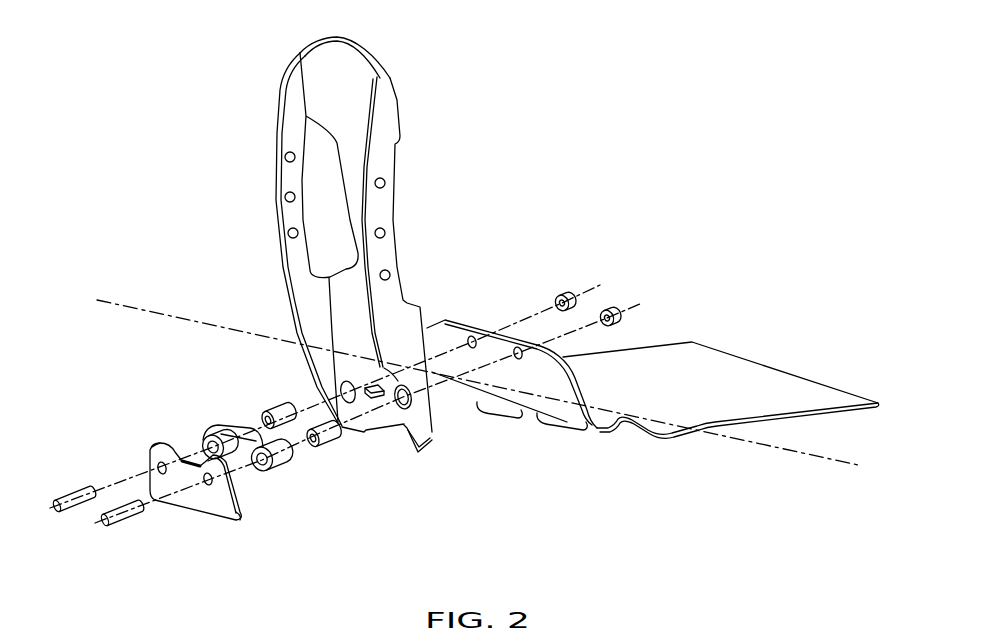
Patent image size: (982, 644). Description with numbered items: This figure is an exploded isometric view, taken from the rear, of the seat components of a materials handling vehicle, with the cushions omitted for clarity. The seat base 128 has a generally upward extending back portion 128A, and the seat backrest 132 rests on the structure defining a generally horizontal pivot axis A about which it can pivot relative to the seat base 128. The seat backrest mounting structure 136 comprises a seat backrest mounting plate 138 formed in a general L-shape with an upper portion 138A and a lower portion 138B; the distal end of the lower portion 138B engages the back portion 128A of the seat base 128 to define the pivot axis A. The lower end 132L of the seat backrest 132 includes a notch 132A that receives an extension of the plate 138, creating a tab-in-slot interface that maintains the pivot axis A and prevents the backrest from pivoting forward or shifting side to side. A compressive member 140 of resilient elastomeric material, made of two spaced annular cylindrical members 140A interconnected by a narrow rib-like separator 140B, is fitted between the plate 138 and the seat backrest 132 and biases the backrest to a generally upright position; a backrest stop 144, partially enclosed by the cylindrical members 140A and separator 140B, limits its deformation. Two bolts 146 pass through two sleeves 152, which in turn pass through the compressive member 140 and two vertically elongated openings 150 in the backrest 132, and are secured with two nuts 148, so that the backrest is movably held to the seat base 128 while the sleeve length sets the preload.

The seat base 128 is at (808, 393).
The back portion of the seat base 128A is at (528, 387).
The seat backrest 132 is at (342, 55).
The notch 132A is at (387, 433).
The lower end of the seat backrest 132L is at (355, 445).
The seat backrest mounting structure 136 is at (141, 459).
The seat backrest mounting plate 138 is at (189, 484).
The upper portion of the mounting plate 138A is at (162, 440).
The lower portion of the mounting plate 138B is at (243, 521).
The compressive member 140 is at (239, 445).
The cylindrical members 140A is at (282, 472).
The separator 140B is at (231, 428).
The backrest stop 144 is at (376, 386).
The bolts 146 is at (59, 514).
The nuts 148 is at (605, 310).
The openings 150 is at (342, 383).
The sleeves 152 is at (287, 438).
The pivot axis A is at (817, 468).